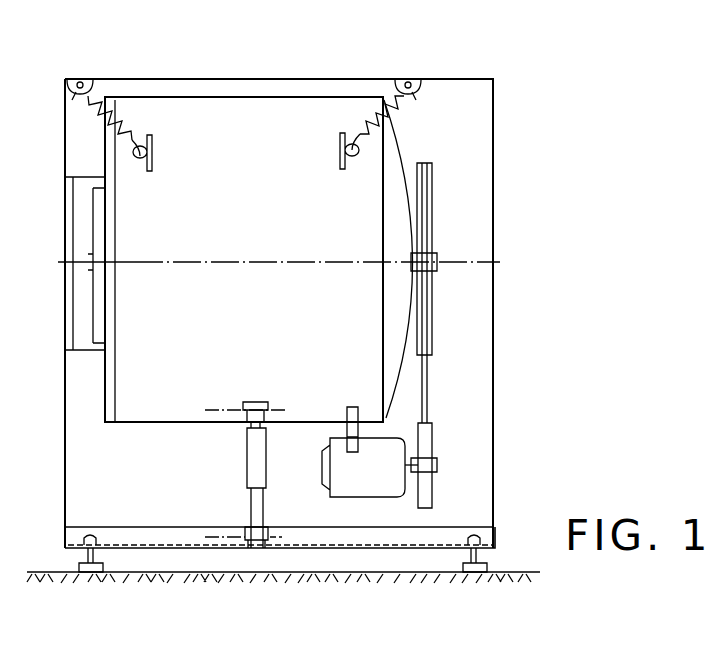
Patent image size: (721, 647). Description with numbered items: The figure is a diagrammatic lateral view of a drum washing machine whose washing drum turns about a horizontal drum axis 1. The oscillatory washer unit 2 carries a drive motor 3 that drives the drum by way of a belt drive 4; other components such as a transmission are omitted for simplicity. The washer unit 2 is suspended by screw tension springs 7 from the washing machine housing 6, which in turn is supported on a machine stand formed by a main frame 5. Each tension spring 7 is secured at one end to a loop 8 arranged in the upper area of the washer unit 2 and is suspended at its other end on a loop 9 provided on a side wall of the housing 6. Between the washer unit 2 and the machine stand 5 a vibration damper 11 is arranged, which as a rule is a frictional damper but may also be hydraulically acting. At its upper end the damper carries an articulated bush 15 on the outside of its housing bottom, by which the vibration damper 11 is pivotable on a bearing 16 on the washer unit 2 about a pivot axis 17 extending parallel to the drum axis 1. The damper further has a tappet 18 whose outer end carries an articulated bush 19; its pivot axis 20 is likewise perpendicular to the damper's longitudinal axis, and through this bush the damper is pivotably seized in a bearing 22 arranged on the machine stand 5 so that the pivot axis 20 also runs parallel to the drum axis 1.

The drum axis 1 is at (232, 262).
The oscillatory washer unit 2 is at (262, 126).
The drive motor 3 is at (345, 472).
The belt drive 4 is at (428, 382).
The main frame 5 is at (68, 535).
The washing machine housing 6 is at (494, 135).
The screw tension springs 7 is at (130, 138).
The loops 8 is at (152, 176).
The loops 9 is at (83, 80).
The vibration damper 11 is at (247, 466).
The articulated bush 15 is at (261, 414).
The bearing 16 is at (265, 402).
The pivot axis 17 is at (211, 409).
The tappet 18 is at (258, 507).
The articulated bush 19 is at (263, 528).
The pivot axis 20 is at (218, 539).
The bearing 22 is at (265, 549).